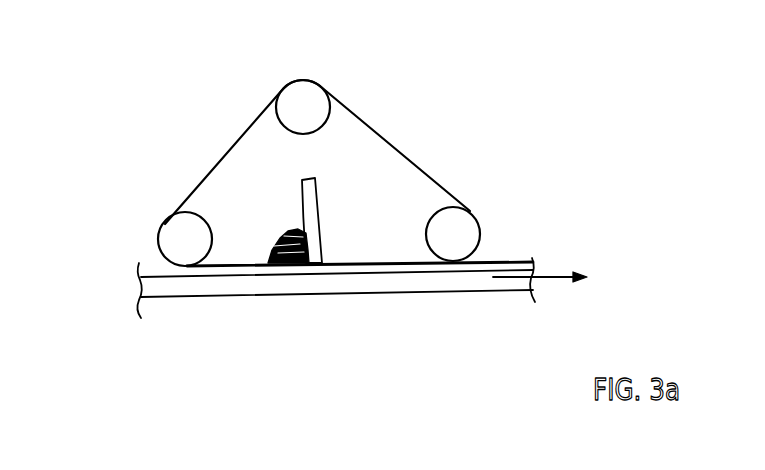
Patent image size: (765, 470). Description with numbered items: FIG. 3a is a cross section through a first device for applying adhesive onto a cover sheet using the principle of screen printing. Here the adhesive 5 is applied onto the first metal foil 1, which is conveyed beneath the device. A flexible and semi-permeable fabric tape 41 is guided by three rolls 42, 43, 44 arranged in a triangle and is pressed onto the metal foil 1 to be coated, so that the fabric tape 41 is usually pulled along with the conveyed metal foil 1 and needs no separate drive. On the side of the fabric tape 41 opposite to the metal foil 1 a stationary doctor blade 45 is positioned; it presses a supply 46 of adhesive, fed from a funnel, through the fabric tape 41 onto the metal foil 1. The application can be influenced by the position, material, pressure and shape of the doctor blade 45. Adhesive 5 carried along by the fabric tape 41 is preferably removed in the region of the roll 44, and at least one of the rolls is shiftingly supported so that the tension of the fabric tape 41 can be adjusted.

The first metal foil 1 is at (320, 282).
The adhesive 5 is at (487, 260).
The fabric tape 41 is at (225, 160).
The roll 42 is at (176, 236).
The roll 43 is at (312, 100).
The roll 44 is at (463, 228).
The doctor blade 45 is at (310, 197).
The supply of adhesive 46 is at (273, 258).